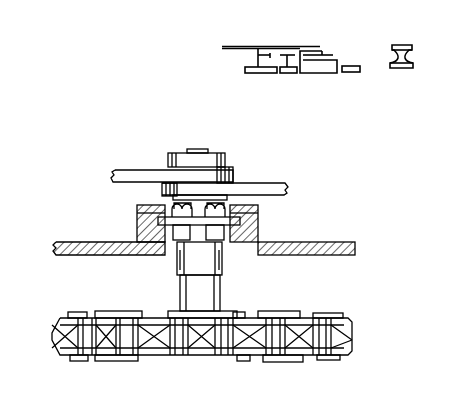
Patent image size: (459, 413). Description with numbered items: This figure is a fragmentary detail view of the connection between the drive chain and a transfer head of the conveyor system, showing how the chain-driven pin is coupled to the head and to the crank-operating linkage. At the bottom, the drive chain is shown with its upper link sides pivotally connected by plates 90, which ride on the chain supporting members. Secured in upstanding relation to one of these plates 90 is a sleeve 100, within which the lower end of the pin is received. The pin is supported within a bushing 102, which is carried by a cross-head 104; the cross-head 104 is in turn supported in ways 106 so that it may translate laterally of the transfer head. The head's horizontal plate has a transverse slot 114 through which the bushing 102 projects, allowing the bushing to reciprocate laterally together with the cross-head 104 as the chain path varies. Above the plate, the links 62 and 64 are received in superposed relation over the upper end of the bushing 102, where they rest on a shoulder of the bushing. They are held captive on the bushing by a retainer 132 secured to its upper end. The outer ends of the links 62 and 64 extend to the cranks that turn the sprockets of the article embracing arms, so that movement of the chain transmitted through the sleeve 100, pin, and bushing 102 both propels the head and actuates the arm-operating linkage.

The link 62 is at (117, 172).
The link 64 is at (258, 190).
The plate 90 is at (175, 317).
The sleeve 100 is at (222, 301).
The bushing 102 is at (210, 264).
The cross-head 104 is at (258, 221).
The ways 106 is at (140, 228).
The transverse slot 114 is at (204, 262).
The retainer 132 is at (223, 154).